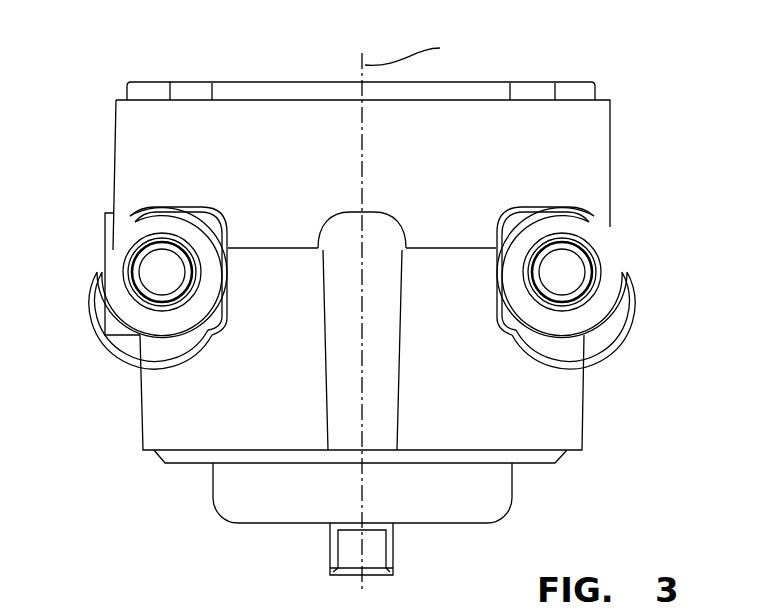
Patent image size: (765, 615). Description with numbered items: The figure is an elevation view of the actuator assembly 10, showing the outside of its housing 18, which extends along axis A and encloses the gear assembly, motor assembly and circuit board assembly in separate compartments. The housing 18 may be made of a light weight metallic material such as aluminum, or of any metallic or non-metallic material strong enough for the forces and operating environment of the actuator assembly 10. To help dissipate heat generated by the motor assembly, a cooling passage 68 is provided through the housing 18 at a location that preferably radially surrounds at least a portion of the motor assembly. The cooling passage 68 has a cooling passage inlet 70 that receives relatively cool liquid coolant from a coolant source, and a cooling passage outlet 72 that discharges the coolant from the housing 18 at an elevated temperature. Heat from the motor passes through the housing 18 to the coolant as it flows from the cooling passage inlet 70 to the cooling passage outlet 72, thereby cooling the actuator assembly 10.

The actuator assembly 10 is at (103, 63).
The housing 18 is at (127, 135).
The cooling passage 68 is at (157, 263).
The cooling passage inlet 70 is at (122, 297).
The cooling passage outlet 72 is at (603, 296).